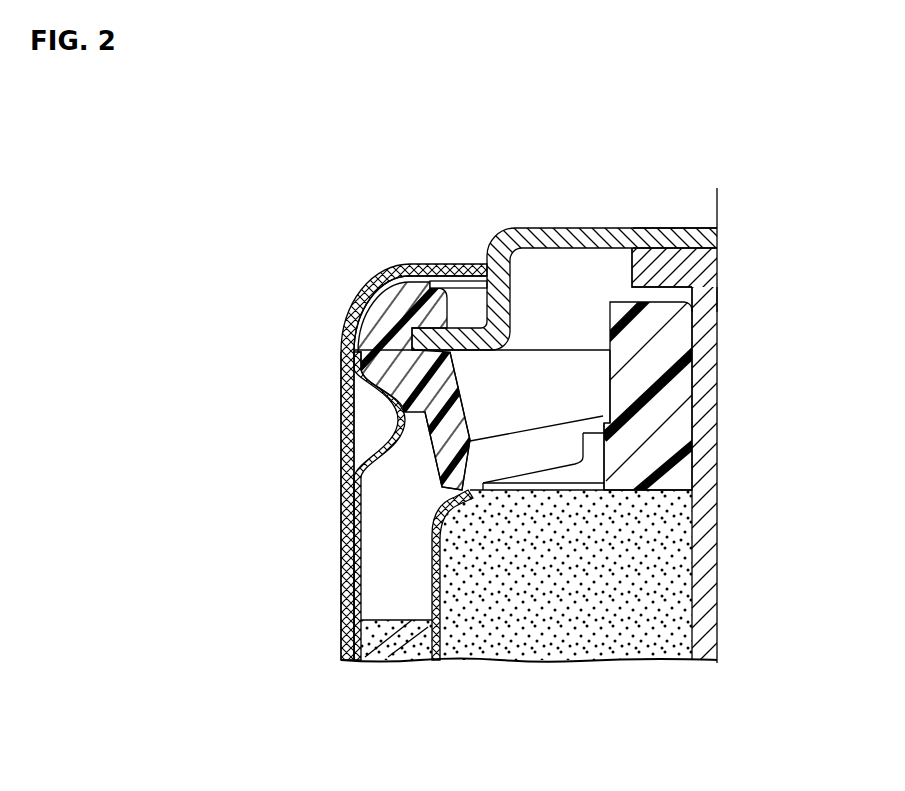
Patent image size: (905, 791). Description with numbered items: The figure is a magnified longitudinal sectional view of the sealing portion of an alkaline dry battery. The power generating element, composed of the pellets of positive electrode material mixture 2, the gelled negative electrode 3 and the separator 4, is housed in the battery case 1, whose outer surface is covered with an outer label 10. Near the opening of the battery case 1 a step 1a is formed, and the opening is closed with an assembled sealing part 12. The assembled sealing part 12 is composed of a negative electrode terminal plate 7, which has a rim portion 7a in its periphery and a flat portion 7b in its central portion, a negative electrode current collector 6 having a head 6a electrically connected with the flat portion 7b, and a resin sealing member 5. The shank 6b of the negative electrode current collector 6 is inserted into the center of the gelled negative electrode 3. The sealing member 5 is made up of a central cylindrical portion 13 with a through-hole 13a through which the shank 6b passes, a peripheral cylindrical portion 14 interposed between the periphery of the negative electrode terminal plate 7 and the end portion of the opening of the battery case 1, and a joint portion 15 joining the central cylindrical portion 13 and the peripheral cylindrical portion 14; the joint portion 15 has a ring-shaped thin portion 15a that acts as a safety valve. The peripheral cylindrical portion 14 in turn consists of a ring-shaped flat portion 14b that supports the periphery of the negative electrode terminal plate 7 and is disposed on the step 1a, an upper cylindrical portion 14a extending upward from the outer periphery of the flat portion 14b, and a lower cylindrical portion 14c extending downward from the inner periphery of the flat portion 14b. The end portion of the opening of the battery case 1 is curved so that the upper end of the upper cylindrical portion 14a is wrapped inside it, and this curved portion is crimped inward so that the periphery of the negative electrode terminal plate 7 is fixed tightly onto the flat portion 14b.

The battery case 1 is at (345, 526).
The step 1a is at (357, 430).
The pellets of positive electrode material mixture 2 is at (396, 662).
The gelled negative electrode 3 is at (563, 612).
The separator 4 is at (432, 572).
The resin sealing member 5 is at (640, 468).
The negative electrode current collector 6 is at (783, 250).
The head 6a is at (665, 272).
The shank 6b is at (694, 304).
The negative electrode terminal plate 7 is at (566, 228).
The rim portion 7a is at (455, 281).
The flat portion 7b is at (658, 240).
The outer label 10 is at (355, 374).
The assembled sealing part 12 is at (697, 336).
The central cylindrical portion 13 is at (642, 364).
The through-hole 13a is at (692, 437).
The peripheral cylindrical portion 14 is at (385, 348).
The upper cylindrical portion 14a is at (395, 306).
The flat portion 14b is at (442, 378).
The lower cylindrical portion 14c is at (428, 452).
The joint portion 15 is at (536, 447).
The ring-shaped thin portion 15a is at (590, 424).